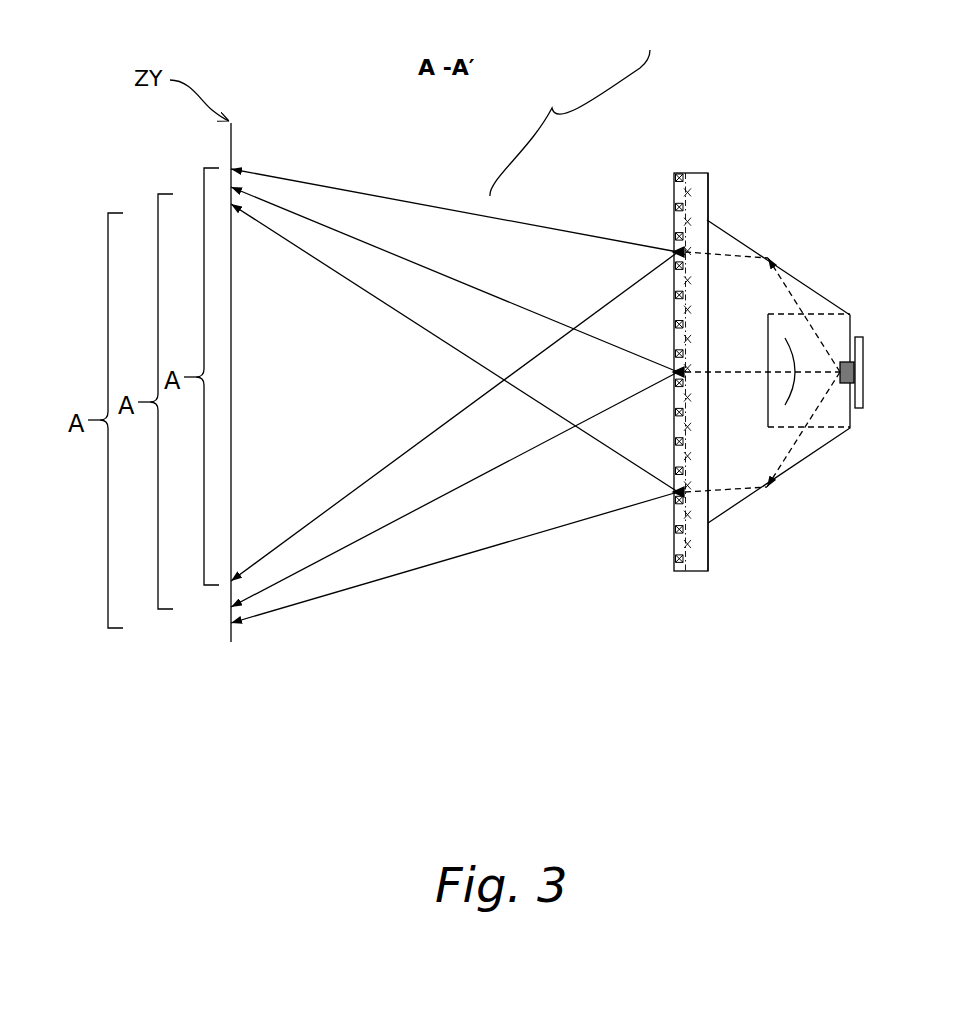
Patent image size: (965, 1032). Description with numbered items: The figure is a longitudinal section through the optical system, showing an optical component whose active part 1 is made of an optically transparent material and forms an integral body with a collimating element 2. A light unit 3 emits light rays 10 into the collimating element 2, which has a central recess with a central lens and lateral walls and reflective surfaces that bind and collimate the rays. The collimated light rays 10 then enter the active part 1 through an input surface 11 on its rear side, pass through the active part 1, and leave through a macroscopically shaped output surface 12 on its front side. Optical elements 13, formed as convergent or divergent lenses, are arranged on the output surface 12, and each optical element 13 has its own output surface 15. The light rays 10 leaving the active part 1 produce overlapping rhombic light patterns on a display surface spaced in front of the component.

The active part 1 is at (690, 578).
The collimating element 2 is at (810, 462).
The light unit 3 is at (865, 372).
The light rays 10 is at (301, 533).
The input surface 11 is at (710, 355).
The output surface 12 is at (620, 578).
The optical elements 13 is at (683, 340).
The output surface of optical element 15 is at (675, 342).